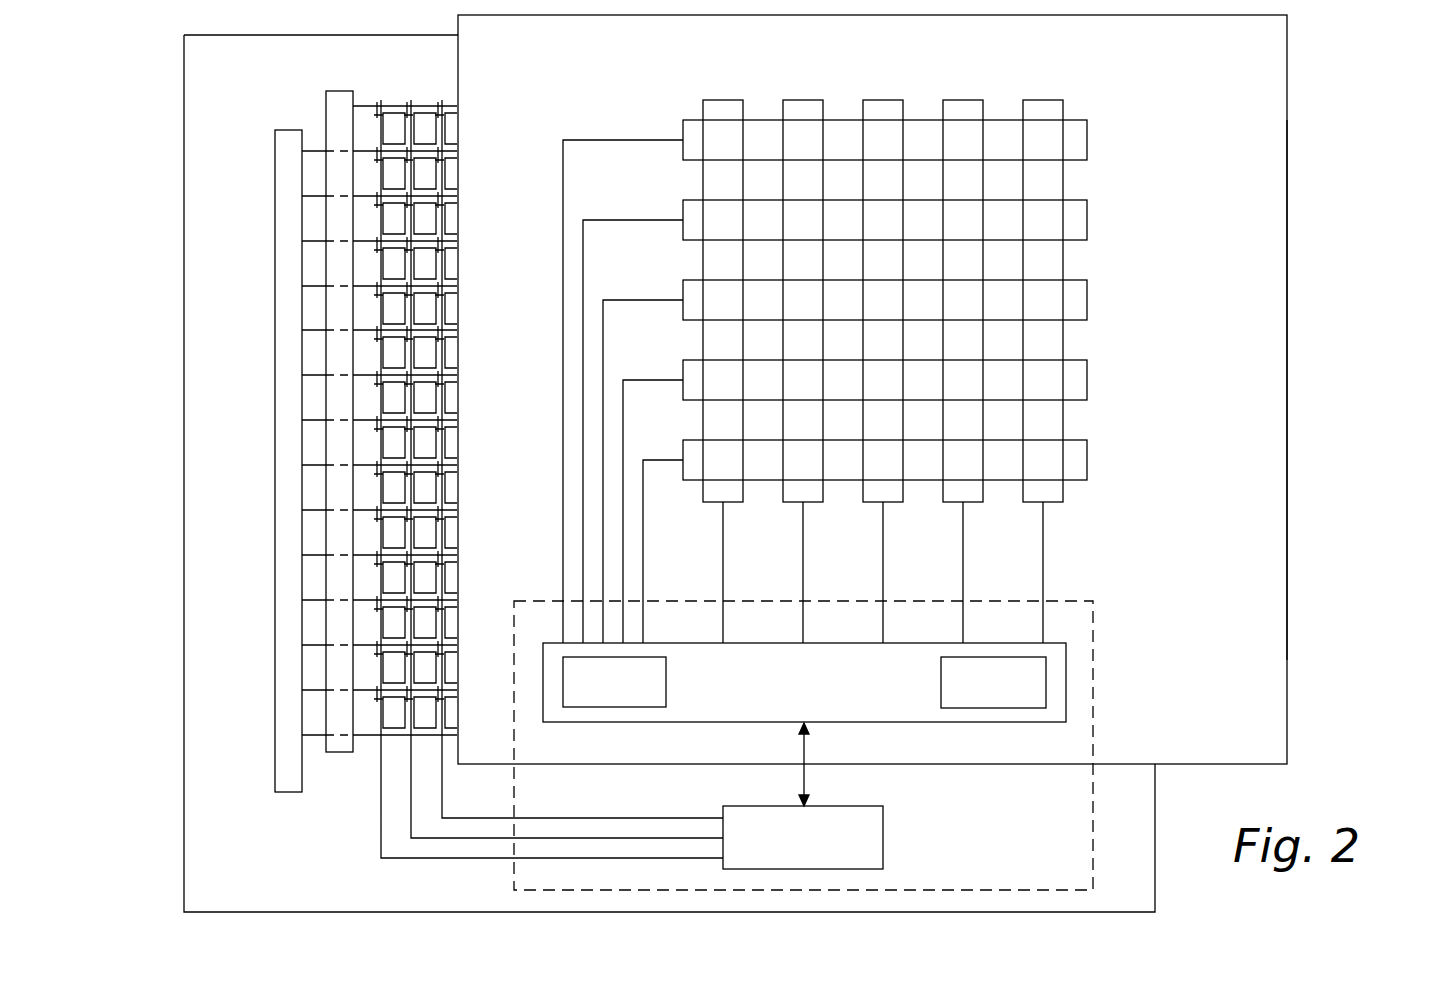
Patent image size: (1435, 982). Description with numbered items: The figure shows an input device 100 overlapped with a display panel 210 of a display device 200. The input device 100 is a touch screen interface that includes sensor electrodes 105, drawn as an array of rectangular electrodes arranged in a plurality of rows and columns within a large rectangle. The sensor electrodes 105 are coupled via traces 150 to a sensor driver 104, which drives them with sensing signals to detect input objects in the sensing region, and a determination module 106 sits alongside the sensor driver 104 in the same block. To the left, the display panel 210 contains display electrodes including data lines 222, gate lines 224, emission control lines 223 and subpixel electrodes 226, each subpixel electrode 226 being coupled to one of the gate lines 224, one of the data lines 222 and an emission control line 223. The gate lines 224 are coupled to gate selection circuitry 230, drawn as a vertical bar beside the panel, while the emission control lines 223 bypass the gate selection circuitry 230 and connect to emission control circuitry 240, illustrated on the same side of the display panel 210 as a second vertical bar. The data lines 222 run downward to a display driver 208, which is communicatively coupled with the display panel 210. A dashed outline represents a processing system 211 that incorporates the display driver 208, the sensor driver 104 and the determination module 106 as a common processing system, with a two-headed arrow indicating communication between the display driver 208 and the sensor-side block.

The display device 200 is at (147, 89).
The input device 100 is at (1328, 89).
The sensor electrodes 105 is at (1278, 172).
The display panel 210 is at (184, 213).
The emission control circuitry 240 is at (285, 144).
The gate selection circuitry 230 is at (337, 103).
The gate lines 224 is at (370, 105).
The data lines 222 is at (383, 105).
The subpixel electrodes 226 is at (395, 130).
The emission control lines 223 is at (372, 738).
The traces 150 is at (563, 558).
The processing system 211 is at (1093, 615).
The sensor driver 104 is at (638, 694).
The determination module 106 is at (1017, 694).
The display driver 208 is at (828, 849).